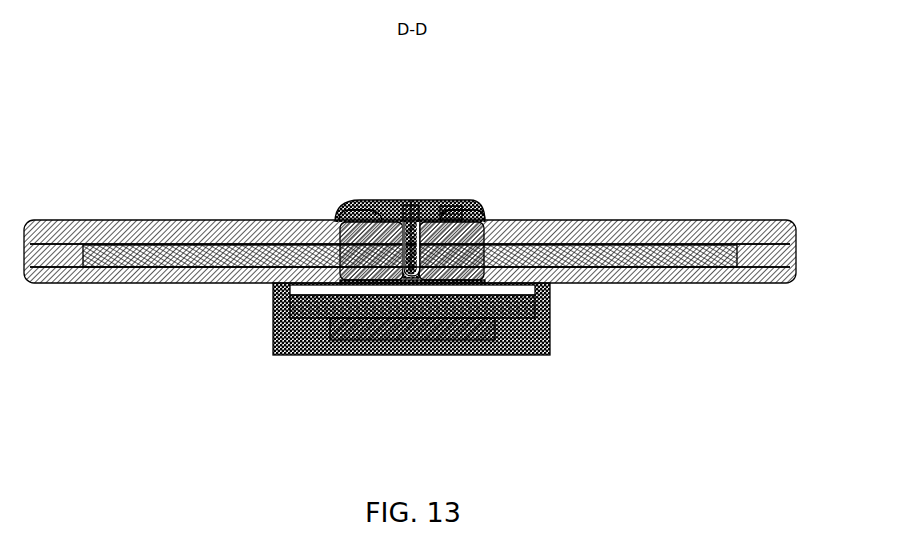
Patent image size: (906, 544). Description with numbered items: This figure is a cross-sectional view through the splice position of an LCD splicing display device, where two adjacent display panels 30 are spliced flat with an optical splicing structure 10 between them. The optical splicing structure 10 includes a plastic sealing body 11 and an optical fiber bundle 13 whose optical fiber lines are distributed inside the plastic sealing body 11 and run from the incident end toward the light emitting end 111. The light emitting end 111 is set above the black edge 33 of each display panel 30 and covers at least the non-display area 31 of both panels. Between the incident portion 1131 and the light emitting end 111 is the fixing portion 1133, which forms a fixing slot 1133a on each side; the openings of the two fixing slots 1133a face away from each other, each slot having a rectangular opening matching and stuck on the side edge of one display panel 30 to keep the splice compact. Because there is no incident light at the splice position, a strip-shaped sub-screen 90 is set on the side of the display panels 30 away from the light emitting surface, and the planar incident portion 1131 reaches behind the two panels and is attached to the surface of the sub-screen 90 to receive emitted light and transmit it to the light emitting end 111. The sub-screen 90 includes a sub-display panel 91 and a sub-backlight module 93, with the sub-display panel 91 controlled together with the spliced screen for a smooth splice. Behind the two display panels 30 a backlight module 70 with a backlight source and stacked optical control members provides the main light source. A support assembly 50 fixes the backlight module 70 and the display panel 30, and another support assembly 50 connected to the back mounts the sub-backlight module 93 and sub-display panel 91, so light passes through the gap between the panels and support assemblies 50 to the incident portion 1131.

The optical splicing structure 10 is at (466, 110).
The plastic sealing body 11 is at (409, 226).
The optical fiber bundle 13 is at (432, 222).
The light emitting end 111 is at (452, 215).
The fixing portion 1133 is at (398, 225).
The fixing slot 1133a is at (378, 212).
The incident portion 1131 is at (470, 292).
The display panel 30 is at (307, 150).
The non-display area 31 is at (272, 230).
The black edge 33 is at (338, 222).
The support assembly 50 is at (212, 284).
The backlight module 70 is at (162, 252).
The sub-screen 90 is at (472, 417).
The sub-display panel 91 is at (465, 320).
The sub-backlight module 93 is at (395, 330).